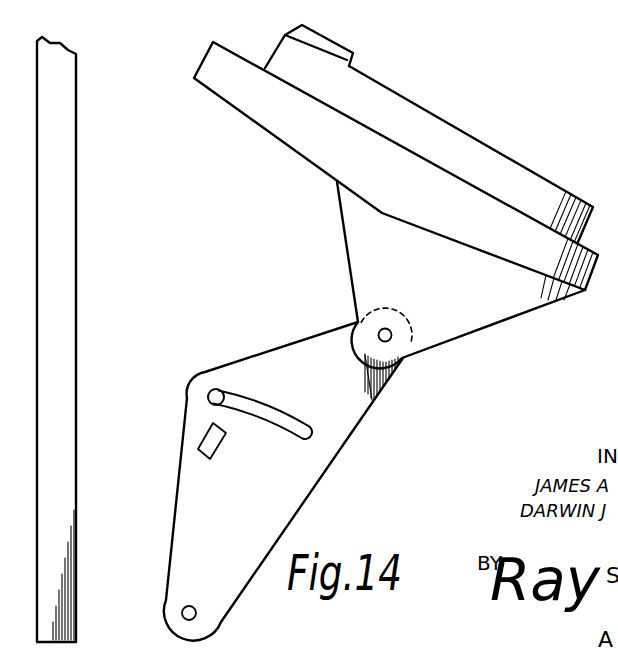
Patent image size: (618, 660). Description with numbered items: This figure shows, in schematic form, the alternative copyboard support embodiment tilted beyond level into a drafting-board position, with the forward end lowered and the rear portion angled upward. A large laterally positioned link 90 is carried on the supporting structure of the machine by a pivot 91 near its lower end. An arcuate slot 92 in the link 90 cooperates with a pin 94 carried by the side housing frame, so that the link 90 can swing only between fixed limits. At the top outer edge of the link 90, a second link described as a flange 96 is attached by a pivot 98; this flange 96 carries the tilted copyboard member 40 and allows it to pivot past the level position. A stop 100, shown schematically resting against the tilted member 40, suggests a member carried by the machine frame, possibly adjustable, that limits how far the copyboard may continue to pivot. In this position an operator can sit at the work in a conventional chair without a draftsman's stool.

The bar 40 is at (289, 147).
The stop 100 is at (333, 50).
The flange 96 is at (493, 320).
The pivot 98 is at (391, 338).
The link 90 is at (283, 512).
The pivot 91 is at (196, 614).
The arcuate slot 92 is at (288, 418).
The pin 94 is at (221, 391).